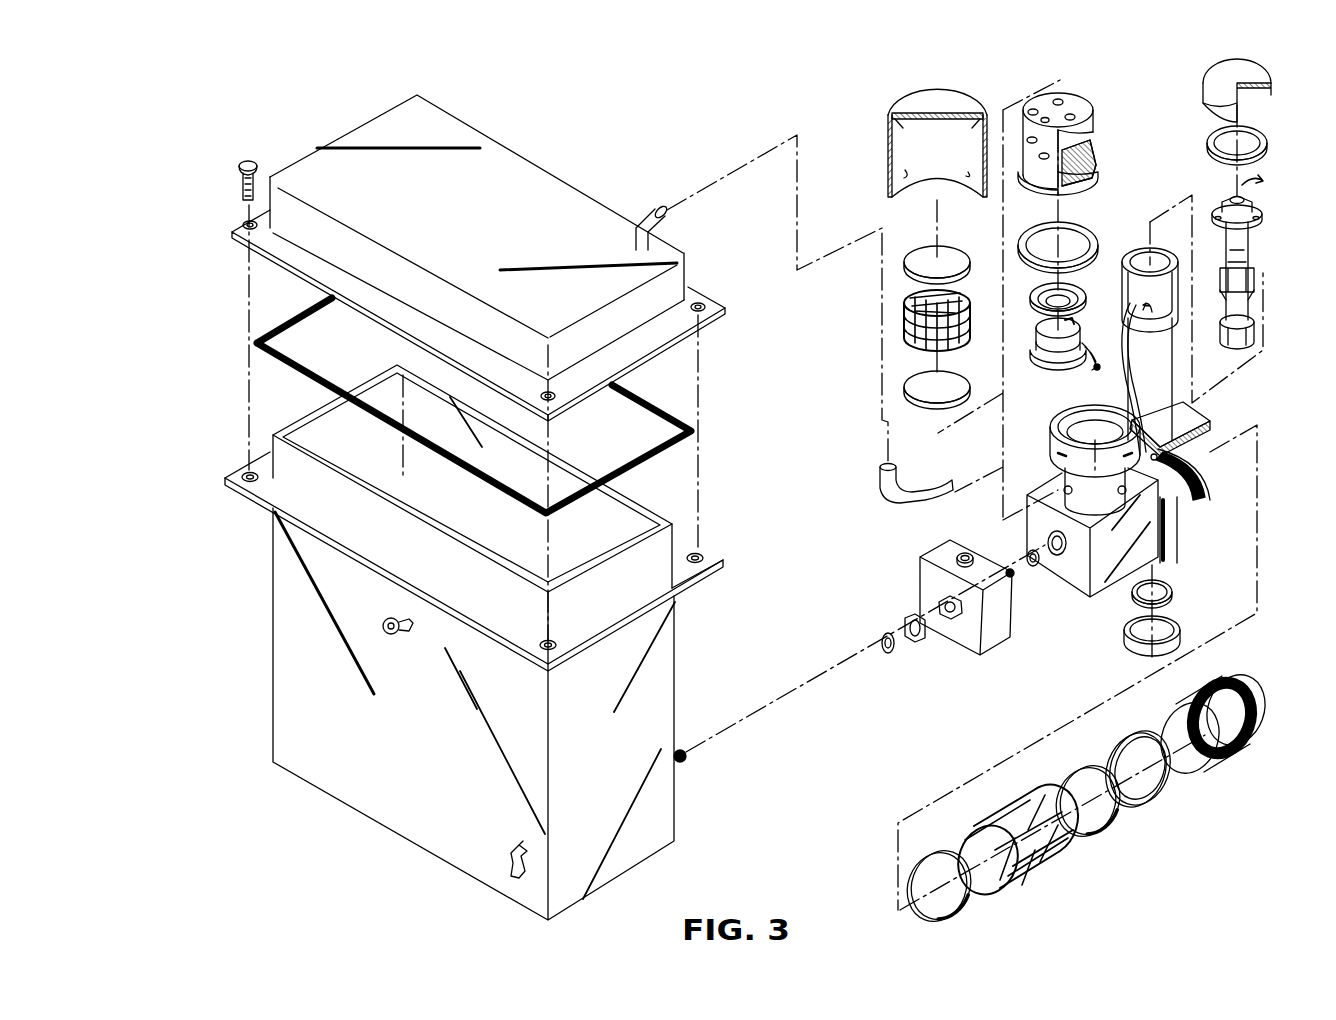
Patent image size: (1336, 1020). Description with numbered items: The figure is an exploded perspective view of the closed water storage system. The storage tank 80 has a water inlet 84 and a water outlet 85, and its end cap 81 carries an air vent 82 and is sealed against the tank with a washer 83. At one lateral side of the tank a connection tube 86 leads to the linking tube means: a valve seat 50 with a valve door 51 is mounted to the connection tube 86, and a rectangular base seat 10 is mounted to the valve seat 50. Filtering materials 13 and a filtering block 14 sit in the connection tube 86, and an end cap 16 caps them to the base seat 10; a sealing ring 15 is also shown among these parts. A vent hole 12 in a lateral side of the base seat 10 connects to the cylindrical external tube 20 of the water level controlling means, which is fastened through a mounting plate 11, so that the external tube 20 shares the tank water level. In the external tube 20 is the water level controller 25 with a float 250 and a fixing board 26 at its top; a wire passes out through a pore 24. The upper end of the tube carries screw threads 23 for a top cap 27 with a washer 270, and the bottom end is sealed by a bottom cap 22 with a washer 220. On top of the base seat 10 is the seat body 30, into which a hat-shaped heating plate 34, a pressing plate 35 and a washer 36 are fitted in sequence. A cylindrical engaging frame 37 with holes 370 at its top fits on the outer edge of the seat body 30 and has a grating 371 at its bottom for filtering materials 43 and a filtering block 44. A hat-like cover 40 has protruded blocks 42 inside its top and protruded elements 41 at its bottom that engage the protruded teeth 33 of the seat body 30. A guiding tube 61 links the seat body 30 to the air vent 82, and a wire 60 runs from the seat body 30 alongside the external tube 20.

The base seat 10 is at (1075, 592).
The mounting plate 11 is at (1188, 472).
The vent hole 12 is at (1186, 514).
The filtering materials 13 is at (940, 916).
The filtering block 14 is at (1045, 877).
The sealing ring 15 is at (1162, 806).
The end cap 16 is at (1234, 758).
The external tube 20 is at (1181, 411).
The bottom cap 22 is at (1126, 636).
The screw threads 23 is at (1174, 275).
The pore 24 is at (1154, 310).
The water level controller 25 is at (1266, 267).
The fixing board 26 is at (1264, 212).
The top cap 27 is at (1215, 70).
The seat body 30 is at (1060, 472).
The protruded teeth 33 is at (1052, 441).
The heating plate 34 is at (1040, 360).
The pressing plate 35 is at (1040, 295).
The washer 36 is at (1025, 255).
The engaging frame 37 is at (1080, 134).
The cover 40 is at (926, 139).
The protruded elements 41 is at (898, 170).
The protruded blocks 42 is at (902, 128).
The filtering materials 43 is at (905, 270).
The filtering block 44 is at (905, 327).
The valve seat 50 is at (948, 601).
The valve door 51 is at (966, 552).
The wire 60 is at (1128, 322).
The guiding tube 61 is at (890, 498).
The storage tank 80 is at (665, 677).
The end cap 81 is at (497, 148).
The air vent 82 is at (642, 212).
The washer 83 is at (658, 400).
The water inlet 84 is at (383, 626).
The water outlet 85 is at (510, 872).
The connection tube 86 is at (686, 762).
The washer 220 is at (1173, 596).
The float 250 is at (1256, 334).
The washer 270 is at (1212, 138).
The holes 370 is at (1070, 113).
The grating 371 is at (1084, 182).